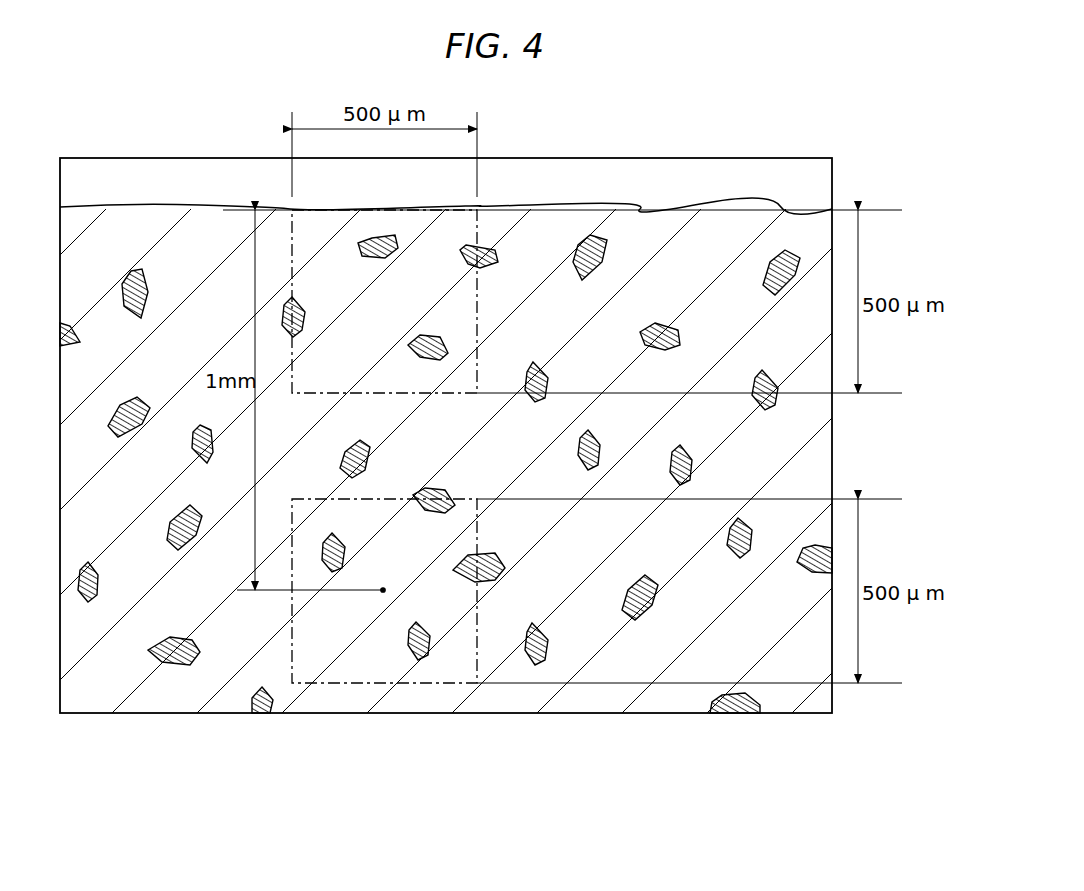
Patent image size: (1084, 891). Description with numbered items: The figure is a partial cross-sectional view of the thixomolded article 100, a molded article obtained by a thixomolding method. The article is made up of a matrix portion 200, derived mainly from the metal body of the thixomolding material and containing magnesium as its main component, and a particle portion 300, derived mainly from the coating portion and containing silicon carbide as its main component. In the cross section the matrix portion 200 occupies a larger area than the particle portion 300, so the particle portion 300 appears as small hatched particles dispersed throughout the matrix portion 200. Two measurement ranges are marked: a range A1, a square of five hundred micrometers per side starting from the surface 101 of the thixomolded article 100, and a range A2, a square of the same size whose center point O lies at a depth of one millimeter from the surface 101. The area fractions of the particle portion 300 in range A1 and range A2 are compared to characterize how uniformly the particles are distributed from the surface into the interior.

The thixomolded article 100 is at (694, 200).
The surface 101 is at (205, 207).
The matrix portion 200 is at (110, 232).
The particle portion 300 is at (118, 410).
The range A1 is at (476, 290).
The range A2 is at (477, 655).
The center point O is at (383, 590).